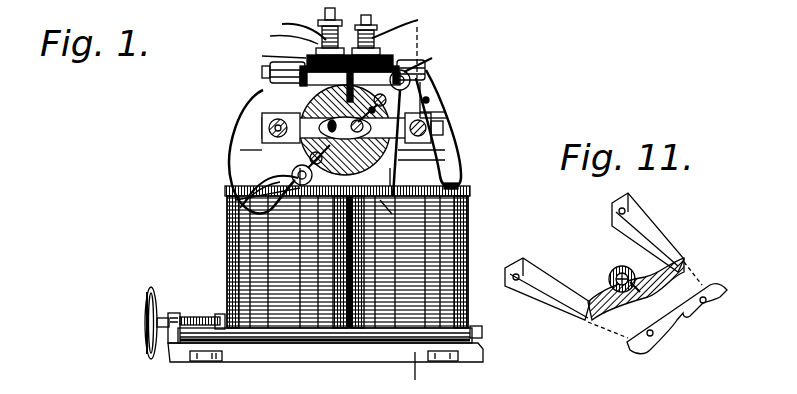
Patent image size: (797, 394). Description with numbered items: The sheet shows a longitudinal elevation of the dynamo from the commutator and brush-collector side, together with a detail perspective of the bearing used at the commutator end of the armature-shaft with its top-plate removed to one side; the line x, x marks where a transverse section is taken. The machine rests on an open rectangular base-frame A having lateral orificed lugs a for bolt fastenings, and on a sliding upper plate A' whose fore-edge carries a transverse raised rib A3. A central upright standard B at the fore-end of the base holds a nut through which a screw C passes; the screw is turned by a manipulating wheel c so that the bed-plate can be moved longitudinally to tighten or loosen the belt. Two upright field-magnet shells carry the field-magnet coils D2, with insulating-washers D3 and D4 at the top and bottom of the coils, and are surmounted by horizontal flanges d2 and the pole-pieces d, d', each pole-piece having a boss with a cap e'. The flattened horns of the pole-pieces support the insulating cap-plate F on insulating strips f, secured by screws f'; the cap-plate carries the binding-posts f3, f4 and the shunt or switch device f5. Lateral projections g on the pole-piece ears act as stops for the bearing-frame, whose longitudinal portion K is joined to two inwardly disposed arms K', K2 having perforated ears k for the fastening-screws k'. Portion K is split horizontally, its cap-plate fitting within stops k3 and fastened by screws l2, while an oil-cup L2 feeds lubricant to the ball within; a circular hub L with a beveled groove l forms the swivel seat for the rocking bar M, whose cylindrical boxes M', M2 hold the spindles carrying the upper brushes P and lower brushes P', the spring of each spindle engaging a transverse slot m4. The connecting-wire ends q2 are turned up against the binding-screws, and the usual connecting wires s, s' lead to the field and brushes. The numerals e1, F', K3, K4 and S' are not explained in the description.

In FIG. 1, the base-frame A is at (325, 365).
In FIG. 1, the upper plate A' is at (497, 341).
In FIG. 1, the raised rib A3 is at (218, 314).
In FIG. 1, the lugs a is at (324, 367).
In FIG. 1, the standard B is at (174, 313).
In FIG. 1, the screw C is at (205, 320).
In FIG. 1, the manipulating wheel c is at (135, 321).
In FIG. 1, the field-magnet coils D2 is at (232, 240).
In FIG. 1, the insulating-washer D3 is at (470, 197).
In FIG. 1, the insulating-washer D4 is at (398, 335).
In FIG. 1, the pole-piece d is at (266, 167).
In FIG. 1, the pole-piece d' is at (478, 165).
In FIG. 1, the horizontal flanges d2 is at (463, 178).
In FIG. 1, the cap e' is at (424, 75).
In FIG. 1, the pivot screw e1 is at (372, 96).
In FIG. 1, the cap-plate F is at (369, 47).
In FIG. 1, the arm F' is at (429, 117).
In FIG. 1, the insulating strip f is at (341, 87).
In FIG. 1, the screws f' is at (274, 57).
In FIG. 1, the binding-post f3 is at (325, 27).
In FIG. 1, the binding-post f4 is at (367, 29).
In FIG. 1, the switch device f5 is at (282, 36).
In FIG. 1, the lateral projections g is at (268, 120).
In FIG. 1, the longitudinal portion K is at (445, 145).
In FIG. 11, the longitudinal portion K is at (653, 306).
In FIG. 11, the arm K' is at (547, 290).
In FIG. 11, the arm K2 is at (648, 232).
In FIG. 1, the frame bar K3 is at (464, 150).
In FIG. 1, the frame piece K4 is at (343, 137).
In FIG. 1, the lateral ears k is at (448, 98).
In FIG. 11, the lateral ears k is at (577, 231).
In FIG. 1, the fastening-screws k' is at (464, 105).
In FIG. 1, the stops k3 is at (268, 143).
In FIG. 11, the stops k3 is at (682, 258).
In FIG. 11, the hub L is at (622, 266).
In FIG. 1, the oil-cup L2 is at (272, 70).
In FIG. 11, the beveled groove l is at (614, 268).
In FIG. 1, the screws l2 is at (300, 92).
In FIG. 1, the rocking bar M is at (215, 151).
In FIG. 1, the cylindrical box M' is at (463, 91).
In FIG. 1, the cylindrical box M2 is at (265, 195).
In FIG. 1, the transverse slot m4 is at (245, 198).
In FIG. 1, the upper brushes P is at (468, 112).
In FIG. 1, the lower brushes P' is at (223, 222).
In FIG. 1, the bent wire end q2 is at (437, 94).
In FIG. 1, the spring S' is at (392, 212).
In FIG. 1, the connecting wire s is at (276, 64).
In FIG. 1, the connecting wire s' is at (395, 29).
In FIG. 1, the section line x is at (409, 199).